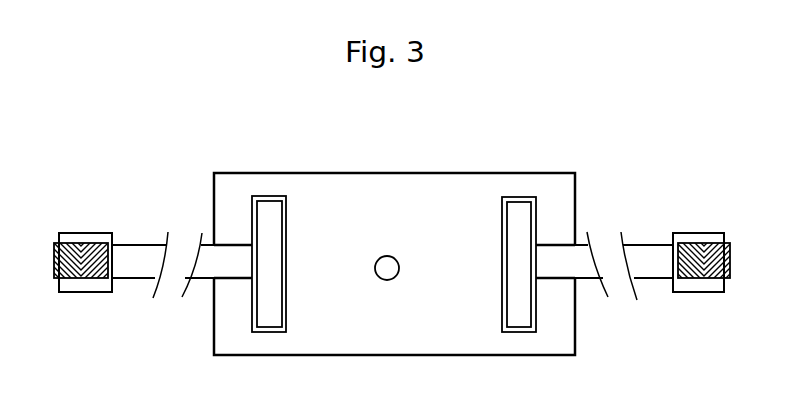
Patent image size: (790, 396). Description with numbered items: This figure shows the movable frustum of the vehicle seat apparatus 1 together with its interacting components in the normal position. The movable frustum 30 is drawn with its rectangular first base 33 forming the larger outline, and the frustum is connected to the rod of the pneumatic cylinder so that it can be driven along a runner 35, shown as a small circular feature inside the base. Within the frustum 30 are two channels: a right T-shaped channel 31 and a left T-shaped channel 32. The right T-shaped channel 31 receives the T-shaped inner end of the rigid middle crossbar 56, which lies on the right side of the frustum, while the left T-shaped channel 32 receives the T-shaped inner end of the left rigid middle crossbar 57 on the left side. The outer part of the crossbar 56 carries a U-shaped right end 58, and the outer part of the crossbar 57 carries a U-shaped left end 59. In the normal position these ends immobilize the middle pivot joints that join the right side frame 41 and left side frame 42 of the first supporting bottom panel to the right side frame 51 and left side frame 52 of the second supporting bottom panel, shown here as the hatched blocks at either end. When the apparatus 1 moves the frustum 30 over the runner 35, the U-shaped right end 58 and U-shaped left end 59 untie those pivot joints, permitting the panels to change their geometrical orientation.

The vehicle seat apparatus 1 is at (504, 135).
The movable frustum 30 is at (337, 276).
The right T-shaped channel 31 is at (525, 199).
The left T-shaped channel 32 is at (245, 212).
The rectangular first base 33 is at (371, 164).
The runner 35 is at (379, 262).
The right side frame 41 is at (707, 240).
The left side frame 42 is at (85, 265).
The right side frame 51 is at (675, 240).
The left side frame 52 is at (50, 244).
The rigid middle crossbar 56 is at (510, 254).
The left rigid middle crossbar 57 is at (237, 255).
The U-shaped right end 58 is at (702, 280).
The U-shaped left end 59 is at (82, 229).